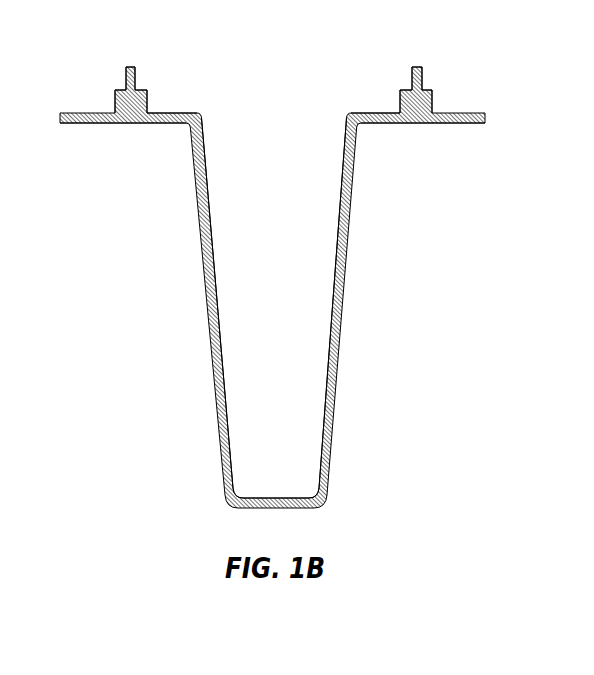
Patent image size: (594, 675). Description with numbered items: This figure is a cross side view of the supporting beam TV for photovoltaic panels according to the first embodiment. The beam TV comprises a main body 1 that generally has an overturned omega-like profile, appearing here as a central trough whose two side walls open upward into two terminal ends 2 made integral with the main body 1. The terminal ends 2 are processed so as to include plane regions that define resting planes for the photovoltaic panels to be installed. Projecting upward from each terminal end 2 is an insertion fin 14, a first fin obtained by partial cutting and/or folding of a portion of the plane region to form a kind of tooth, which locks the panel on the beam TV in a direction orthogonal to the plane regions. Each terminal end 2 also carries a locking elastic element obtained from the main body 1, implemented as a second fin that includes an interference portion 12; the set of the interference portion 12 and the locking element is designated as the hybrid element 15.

The main body 1 is at (347, 302).
The terminal end 2 is at (90, 136).
The interference portion 12 is at (396, 83).
The insertion fin 14 is at (413, 58).
The hybrid element 15 is at (376, 105).
The beam TV is at (128, 425).